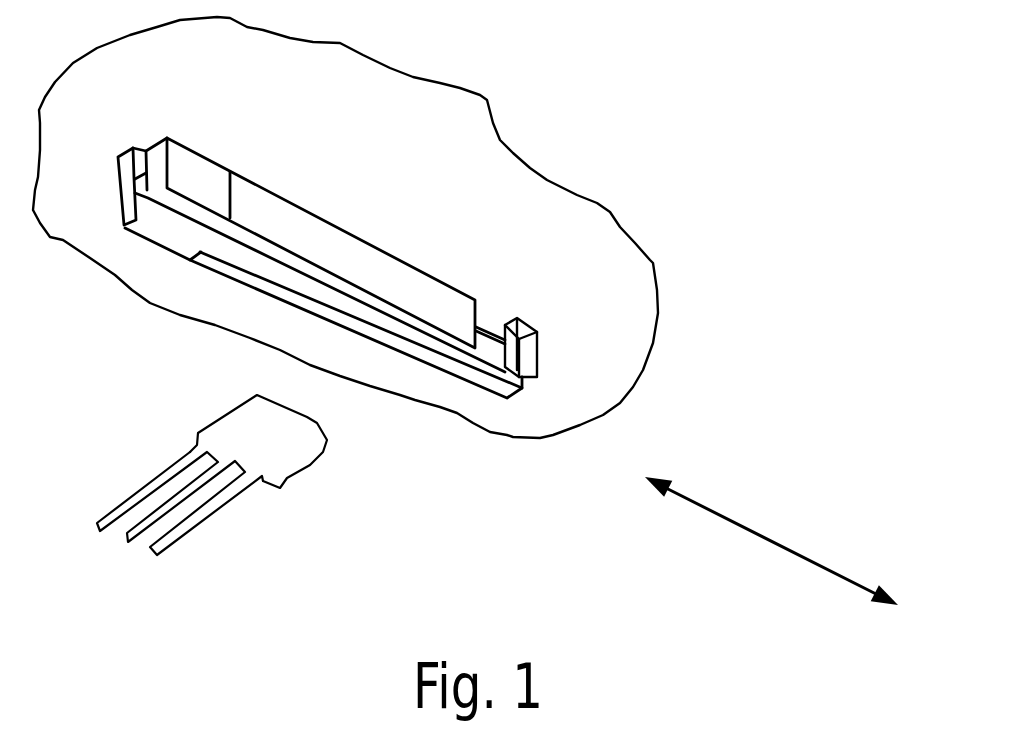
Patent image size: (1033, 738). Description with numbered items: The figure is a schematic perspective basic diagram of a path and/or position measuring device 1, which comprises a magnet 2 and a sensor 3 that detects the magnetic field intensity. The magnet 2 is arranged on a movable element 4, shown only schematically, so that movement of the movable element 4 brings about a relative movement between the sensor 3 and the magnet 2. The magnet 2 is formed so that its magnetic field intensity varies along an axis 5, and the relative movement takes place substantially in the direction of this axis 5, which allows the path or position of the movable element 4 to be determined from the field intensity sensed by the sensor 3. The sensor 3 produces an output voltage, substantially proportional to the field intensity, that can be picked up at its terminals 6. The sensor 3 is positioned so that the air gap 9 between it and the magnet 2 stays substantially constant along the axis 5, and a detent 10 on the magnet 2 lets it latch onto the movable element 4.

The path and/or position measuring device 1 is at (580, 100).
The magnet 2 is at (290, 215).
The sensor 3 is at (300, 473).
The movable element 4 is at (613, 240).
The axis 5 is at (773, 537).
The terminals 6 is at (155, 555).
The air gap 9 is at (272, 372).
The detent 10 is at (502, 345).